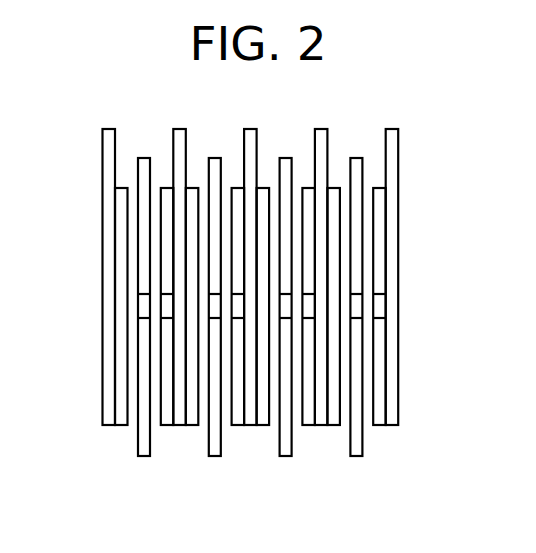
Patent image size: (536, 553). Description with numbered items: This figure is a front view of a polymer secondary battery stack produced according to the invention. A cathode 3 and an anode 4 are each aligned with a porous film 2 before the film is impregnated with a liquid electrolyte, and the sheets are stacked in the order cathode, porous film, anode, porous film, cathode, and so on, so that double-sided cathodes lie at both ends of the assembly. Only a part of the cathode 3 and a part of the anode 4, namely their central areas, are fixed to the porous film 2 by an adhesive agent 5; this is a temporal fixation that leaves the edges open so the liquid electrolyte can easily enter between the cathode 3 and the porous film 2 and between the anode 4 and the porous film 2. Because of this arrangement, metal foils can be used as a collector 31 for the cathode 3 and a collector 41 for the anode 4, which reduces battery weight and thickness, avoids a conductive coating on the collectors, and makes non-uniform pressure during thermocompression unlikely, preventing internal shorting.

The porous film 2 is at (154, 172).
The cathode 3 is at (121, 427).
The collector 31 is at (104, 427).
The anode 4 is at (169, 427).
The collector 41 is at (182, 427).
The adhesive agent 5 is at (143, 305).